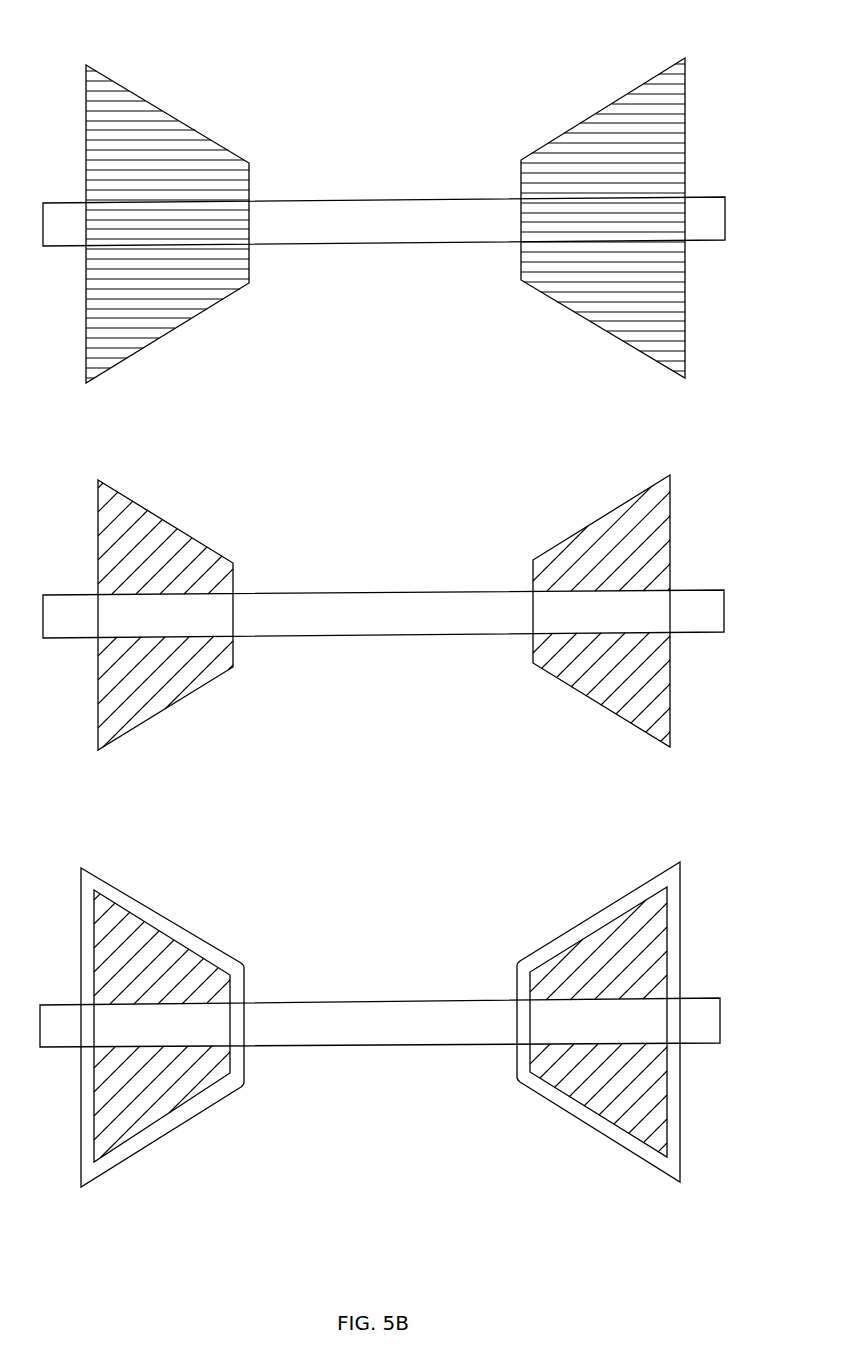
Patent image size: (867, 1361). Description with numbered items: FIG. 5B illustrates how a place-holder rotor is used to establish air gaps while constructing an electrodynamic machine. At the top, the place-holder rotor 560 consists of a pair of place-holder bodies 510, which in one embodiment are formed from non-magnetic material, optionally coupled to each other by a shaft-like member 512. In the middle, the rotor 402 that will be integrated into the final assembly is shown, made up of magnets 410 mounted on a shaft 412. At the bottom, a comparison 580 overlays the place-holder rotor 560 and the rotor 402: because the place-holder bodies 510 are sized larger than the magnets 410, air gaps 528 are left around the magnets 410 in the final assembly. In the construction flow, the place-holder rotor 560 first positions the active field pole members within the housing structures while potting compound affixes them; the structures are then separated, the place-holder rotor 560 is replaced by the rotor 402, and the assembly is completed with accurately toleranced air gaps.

The place-holder rotor 560 is at (369, 40).
The place-holder bodies 510 is at (180, 122).
The shaft-like member 512 is at (380, 244).
The rotor 402 is at (389, 480).
The magnets 410 is at (175, 527).
The shaft 412 is at (353, 634).
The comparison 580 is at (383, 865).
The air gaps 528 is at (40, 880).